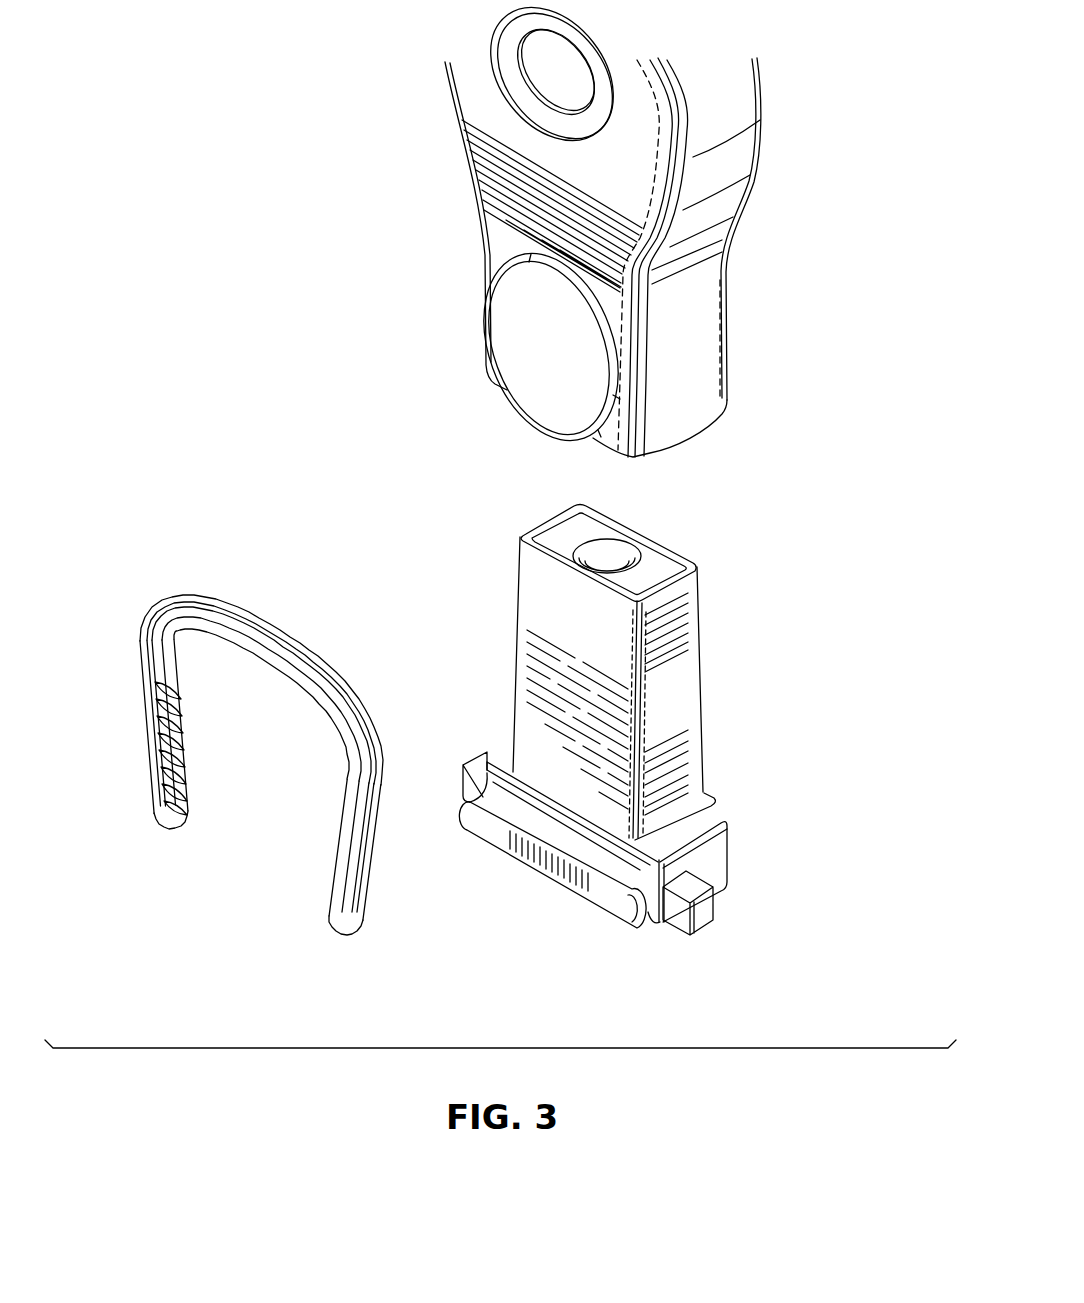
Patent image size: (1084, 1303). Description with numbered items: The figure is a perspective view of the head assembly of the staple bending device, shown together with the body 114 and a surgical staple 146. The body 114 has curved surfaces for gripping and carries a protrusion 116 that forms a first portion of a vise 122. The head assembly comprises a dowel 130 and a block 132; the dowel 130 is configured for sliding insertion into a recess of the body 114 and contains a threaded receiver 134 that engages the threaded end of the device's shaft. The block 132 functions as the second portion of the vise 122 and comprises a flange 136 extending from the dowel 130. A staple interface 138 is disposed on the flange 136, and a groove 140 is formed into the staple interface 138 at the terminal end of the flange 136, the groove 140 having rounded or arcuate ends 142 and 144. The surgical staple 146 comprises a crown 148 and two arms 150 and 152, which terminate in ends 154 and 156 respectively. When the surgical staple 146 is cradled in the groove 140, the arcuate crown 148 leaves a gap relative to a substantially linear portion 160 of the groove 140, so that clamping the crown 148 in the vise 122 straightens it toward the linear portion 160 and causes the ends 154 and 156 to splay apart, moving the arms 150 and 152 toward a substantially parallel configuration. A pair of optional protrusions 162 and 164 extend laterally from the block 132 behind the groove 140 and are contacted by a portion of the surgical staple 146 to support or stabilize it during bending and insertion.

The body 114 is at (743, 121).
The protrusion 116 is at (527, 358).
The vise 122 is at (805, 591).
The dowel 130 is at (665, 668).
The block 132 is at (737, 868).
The threaded receiver 134 is at (618, 555).
The flange 136 is at (712, 818).
The staple interface 138 is at (504, 876).
The groove 140 is at (597, 853).
The arcuate end 142 is at (475, 768).
The arcuate end 144 is at (653, 925).
The surgical staple 146 is at (186, 590).
The crown 148 is at (273, 643).
The arm 150 is at (148, 697).
The arm 152 is at (361, 863).
The end 154 is at (171, 829).
The end 156 is at (347, 936).
The substantially linear portion 160 is at (560, 838).
The protrusion 162 is at (477, 770).
The protrusion 164 is at (697, 915).